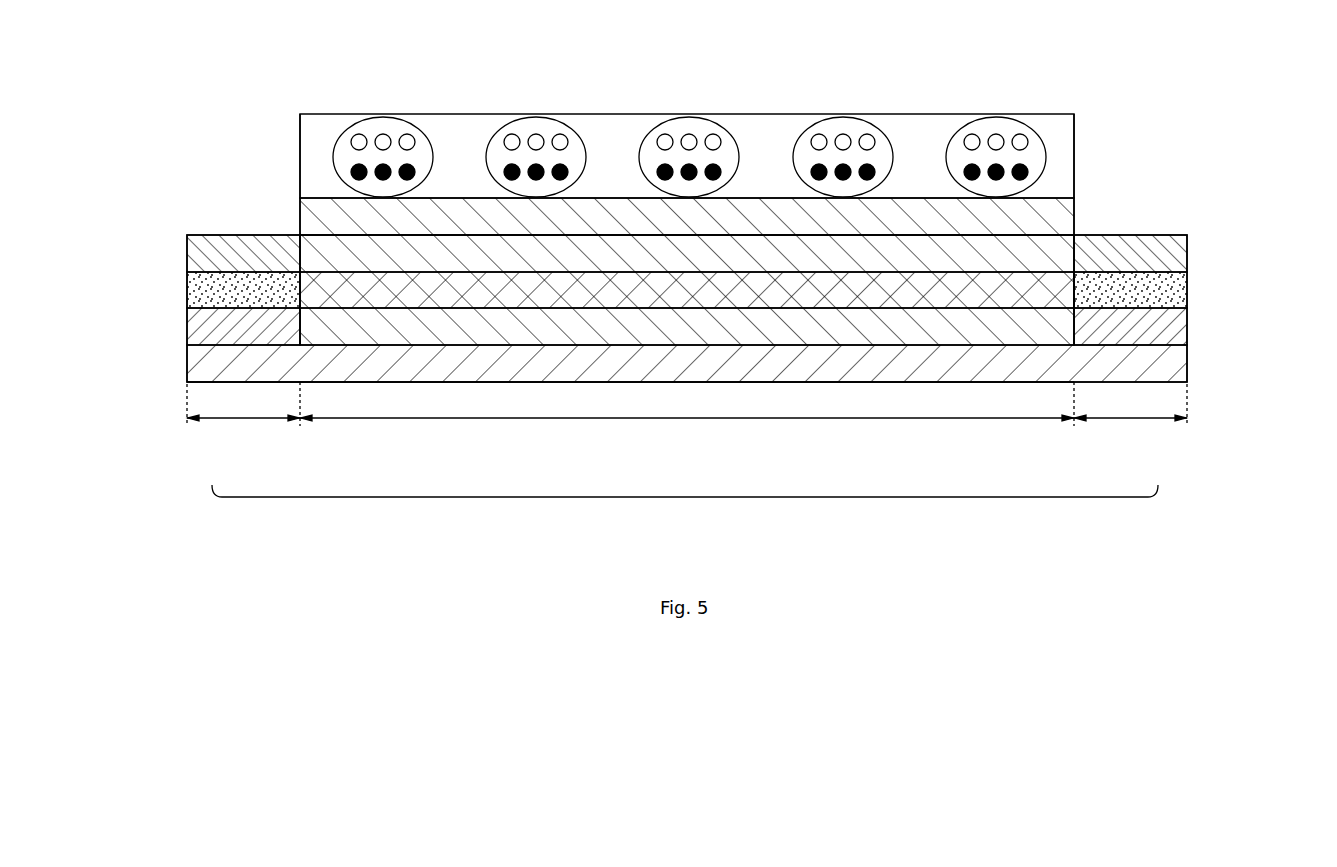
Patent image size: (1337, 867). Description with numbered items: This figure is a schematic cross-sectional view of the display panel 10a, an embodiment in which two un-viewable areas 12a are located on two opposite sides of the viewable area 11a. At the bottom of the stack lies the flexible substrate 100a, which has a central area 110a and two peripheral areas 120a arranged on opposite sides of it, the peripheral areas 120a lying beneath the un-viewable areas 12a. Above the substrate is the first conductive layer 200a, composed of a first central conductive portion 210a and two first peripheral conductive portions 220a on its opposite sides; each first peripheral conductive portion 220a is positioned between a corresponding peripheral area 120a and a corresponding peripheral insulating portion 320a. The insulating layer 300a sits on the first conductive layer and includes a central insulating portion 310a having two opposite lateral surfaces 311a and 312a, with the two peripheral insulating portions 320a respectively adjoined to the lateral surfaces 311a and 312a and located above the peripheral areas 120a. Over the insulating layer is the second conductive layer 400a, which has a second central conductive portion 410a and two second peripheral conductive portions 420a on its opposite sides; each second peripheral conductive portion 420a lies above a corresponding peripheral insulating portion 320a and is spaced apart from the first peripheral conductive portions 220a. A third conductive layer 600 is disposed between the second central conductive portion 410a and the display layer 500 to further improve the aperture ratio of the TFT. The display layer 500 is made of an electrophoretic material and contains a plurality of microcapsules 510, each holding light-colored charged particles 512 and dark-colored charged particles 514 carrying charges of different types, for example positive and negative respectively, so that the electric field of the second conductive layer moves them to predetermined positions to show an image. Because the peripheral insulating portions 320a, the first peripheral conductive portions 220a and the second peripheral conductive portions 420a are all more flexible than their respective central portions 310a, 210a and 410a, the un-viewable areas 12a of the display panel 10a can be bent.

The display panel 10a is at (99, 38).
The viewable area 11a is at (867, 394).
The un-viewable area 12a is at (228, 394).
The flexible substrate 100a is at (687, 458).
The central area 110a is at (688, 420).
The peripheral area 120a is at (240, 420).
The first conductive layer 200a is at (692, 341).
The first central conductive portion 210a is at (1053, 327).
The first peripheral conductive portion 220a is at (187, 325).
The insulating layer 300a is at (692, 186).
The central insulating portion 310a is at (769, 186).
The lateral surface 311a is at (298, 290).
The lateral surface 312a is at (1073, 283).
The peripheral insulating portion 320a is at (187, 290).
The second conductive layer 400a is at (692, 245).
The second central conductive portion 410a is at (1053, 255).
The second peripheral conductive portion 420a is at (187, 245).
The display layer 500 is at (687, 113).
The microcapsule 510 is at (408, 113).
The light-colored charged particle 512 is at (422, 138).
The dark-colored charged particle 514 is at (416, 168).
The third conductive layer 600 is at (1053, 218).